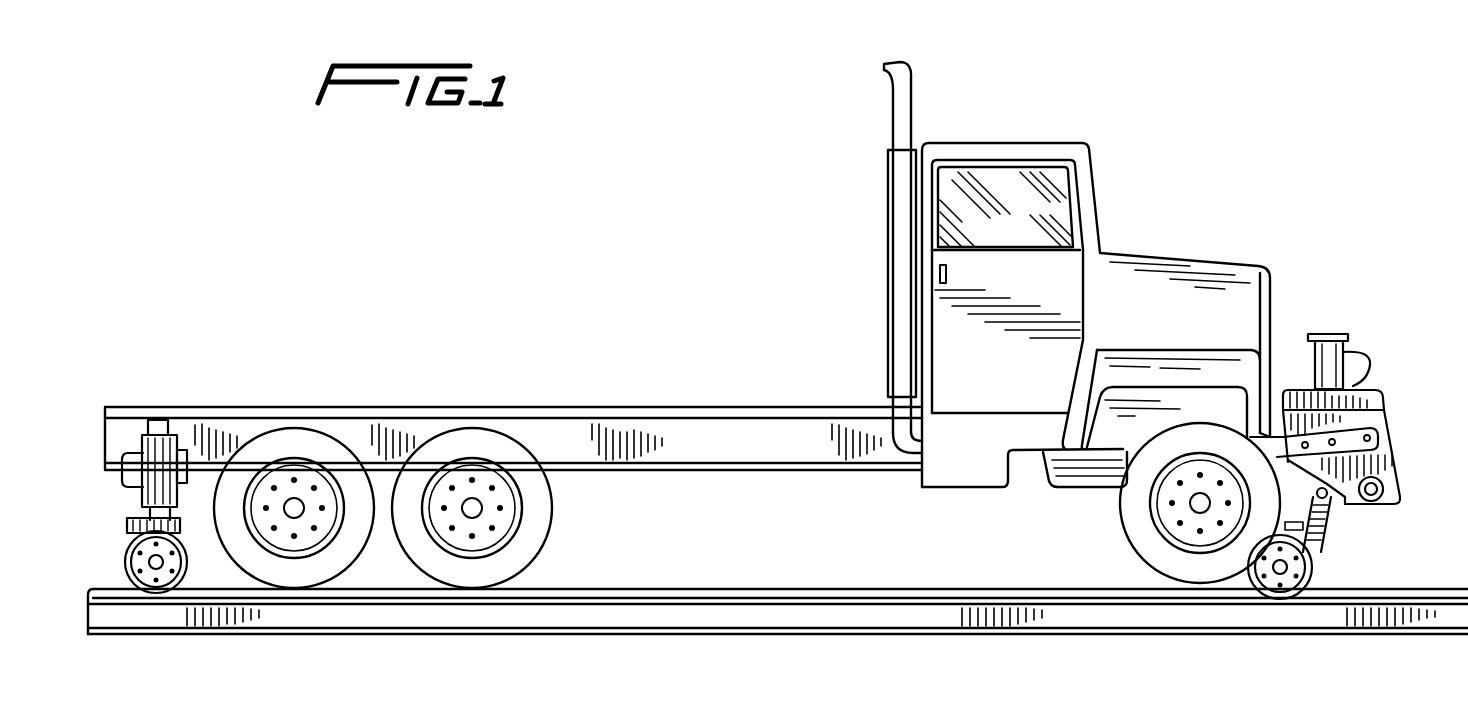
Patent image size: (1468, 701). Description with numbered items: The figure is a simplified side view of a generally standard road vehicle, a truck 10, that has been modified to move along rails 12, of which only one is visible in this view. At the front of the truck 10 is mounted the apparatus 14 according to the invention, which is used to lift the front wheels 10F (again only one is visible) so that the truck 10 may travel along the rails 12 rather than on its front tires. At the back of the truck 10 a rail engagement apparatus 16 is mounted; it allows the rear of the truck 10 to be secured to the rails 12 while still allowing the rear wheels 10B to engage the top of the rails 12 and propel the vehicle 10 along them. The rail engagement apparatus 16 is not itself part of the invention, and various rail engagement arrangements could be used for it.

The truck 10 is at (1150, 253).
The wheels 10B is at (438, 450).
The front wheels 10F is at (1142, 522).
The rails 12 is at (790, 583).
The apparatus 14 is at (1383, 397).
The rail engagement apparatus 16 is at (113, 468).